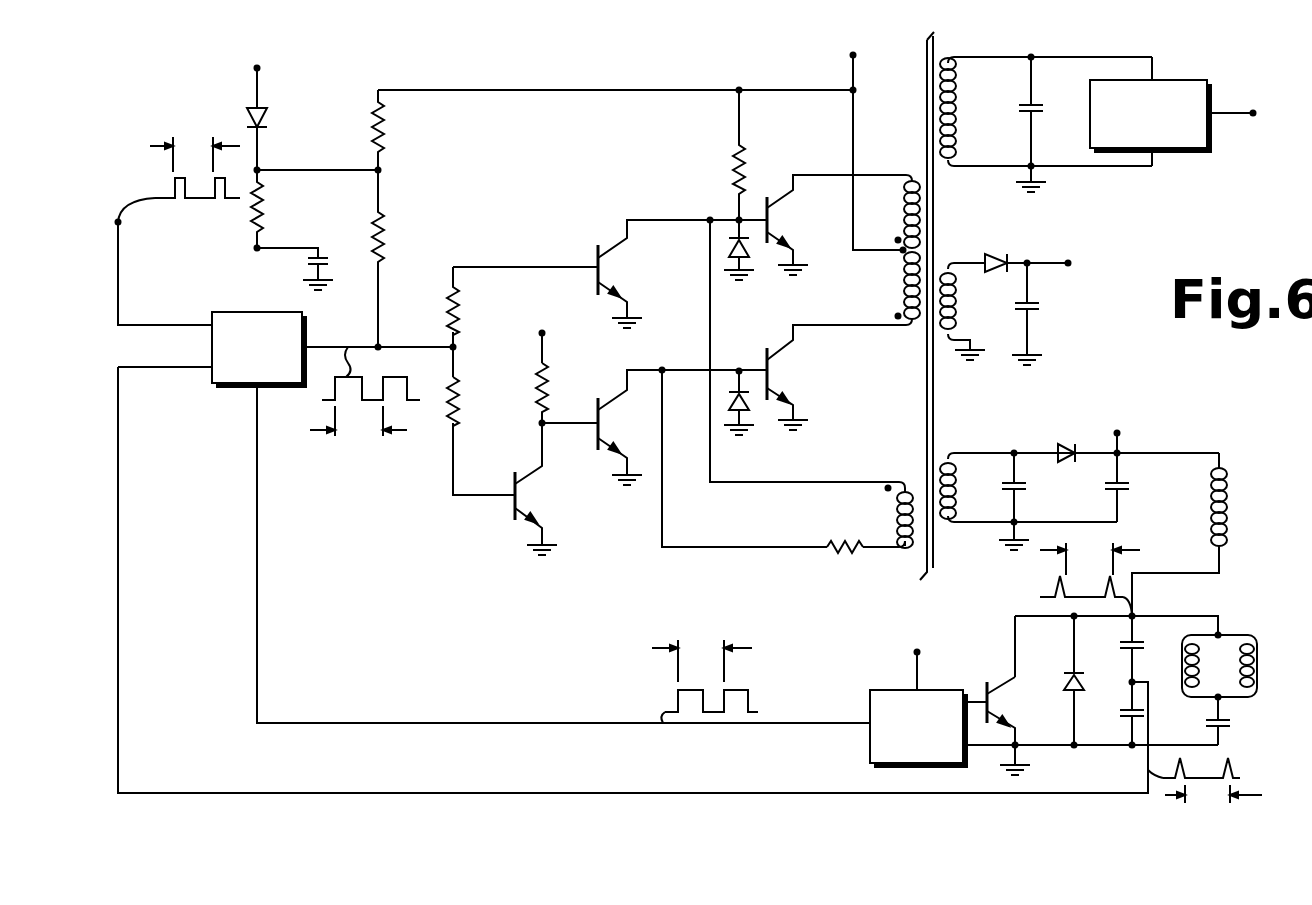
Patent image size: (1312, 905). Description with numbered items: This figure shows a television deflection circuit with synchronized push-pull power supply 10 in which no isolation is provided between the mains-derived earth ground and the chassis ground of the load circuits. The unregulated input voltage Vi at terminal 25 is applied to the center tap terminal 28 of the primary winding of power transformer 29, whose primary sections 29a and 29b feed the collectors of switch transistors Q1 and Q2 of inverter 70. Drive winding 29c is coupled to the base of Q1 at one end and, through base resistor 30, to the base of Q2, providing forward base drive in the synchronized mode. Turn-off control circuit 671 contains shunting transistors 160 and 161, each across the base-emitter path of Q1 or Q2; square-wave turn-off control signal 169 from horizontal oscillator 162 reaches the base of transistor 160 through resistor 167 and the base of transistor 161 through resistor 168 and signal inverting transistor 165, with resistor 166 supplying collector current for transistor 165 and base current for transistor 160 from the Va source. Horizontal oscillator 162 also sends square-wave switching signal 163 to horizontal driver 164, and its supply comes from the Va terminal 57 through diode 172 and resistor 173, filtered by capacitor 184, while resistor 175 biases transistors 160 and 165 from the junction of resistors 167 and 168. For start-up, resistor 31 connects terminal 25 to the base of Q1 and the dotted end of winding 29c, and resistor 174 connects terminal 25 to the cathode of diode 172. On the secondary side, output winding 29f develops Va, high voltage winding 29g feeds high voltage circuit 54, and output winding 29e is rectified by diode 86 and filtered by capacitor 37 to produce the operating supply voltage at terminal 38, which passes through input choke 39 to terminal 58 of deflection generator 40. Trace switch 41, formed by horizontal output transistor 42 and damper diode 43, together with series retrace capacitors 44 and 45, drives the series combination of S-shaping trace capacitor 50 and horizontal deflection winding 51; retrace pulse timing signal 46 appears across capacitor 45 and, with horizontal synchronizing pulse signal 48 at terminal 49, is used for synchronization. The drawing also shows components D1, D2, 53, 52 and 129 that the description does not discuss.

The terminal 57 is at (254, 70).
The diode 172 is at (262, 110).
The resistor 173 is at (256, 221).
The capacitor 184 is at (326, 263).
The resistor 174 is at (379, 112).
The resistor 175 is at (379, 222).
The horizontal synchronizing pulse signal 48 is at (172, 194).
The terminal 49 is at (120, 222).
The horizontal oscillator 162 is at (210, 348).
The turn-off switching control signal 169 is at (408, 372).
The turn-off control circuit 671 is at (380, 502).
The resistor 167 is at (455, 298).
The resistor 168 is at (454, 429).
The resistor 166 is at (547, 372).
The signal inverting transistor 165 is at (516, 500).
The turn-off shunting transistor 160 is at (598, 272).
The turn-off shunting transistor 161 is at (598, 424).
The resistor 31 is at (742, 161).
The controllable switch transistor Q1 is at (800, 230).
The diode D1 is at (750, 258).
The inverter 70 is at (762, 334).
The controllable switch transistor Q2 is at (804, 382).
The diode D2 is at (750, 410).
The output terminal 25 is at (854, 58).
The power transformer 29 is at (914, 60).
The primary winding section 29a is at (904, 216).
The center tap terminal 28 is at (902, 254).
The primary winding section 29b is at (904, 302).
The transformer core 129 is at (933, 210).
The drive winding 29c is at (896, 518).
The base resistor 30 is at (830, 546).
The high voltage winding 29g is at (953, 144).
The capacitor 53 is at (1038, 112).
The high voltage circuit 54 is at (1210, 114).
The output winding 29f is at (953, 300).
The deflection circuit with synchronized power supply 10 is at (1232, 398).
The diode 86 is at (1064, 446).
The terminal 38 is at (1120, 434).
The capacitor 52 is at (1020, 490).
The capacitor 37 is at (1124, 490).
The output winding 29e is at (953, 496).
The input choke 39 is at (1224, 512).
The deflection generator 40 is at (1220, 600).
The deflection generator terminal 58 is at (1132, 616).
The horizontal output transistor 42 is at (998, 682).
The trace switch 41 is at (1046, 710).
The horizontal driver 164 is at (870, 750).
The square-wave switching signal 163 is at (752, 698).
The retrace capacitor 44 is at (1122, 650).
The retrace capacitor 45 is at (1122, 724).
The damper diode 43 is at (1080, 686).
The horizontal deflection winding 51 is at (1254, 656).
The trace capacitor 50 is at (1226, 724).
The retrace pulse timing signal 46 is at (1234, 774).